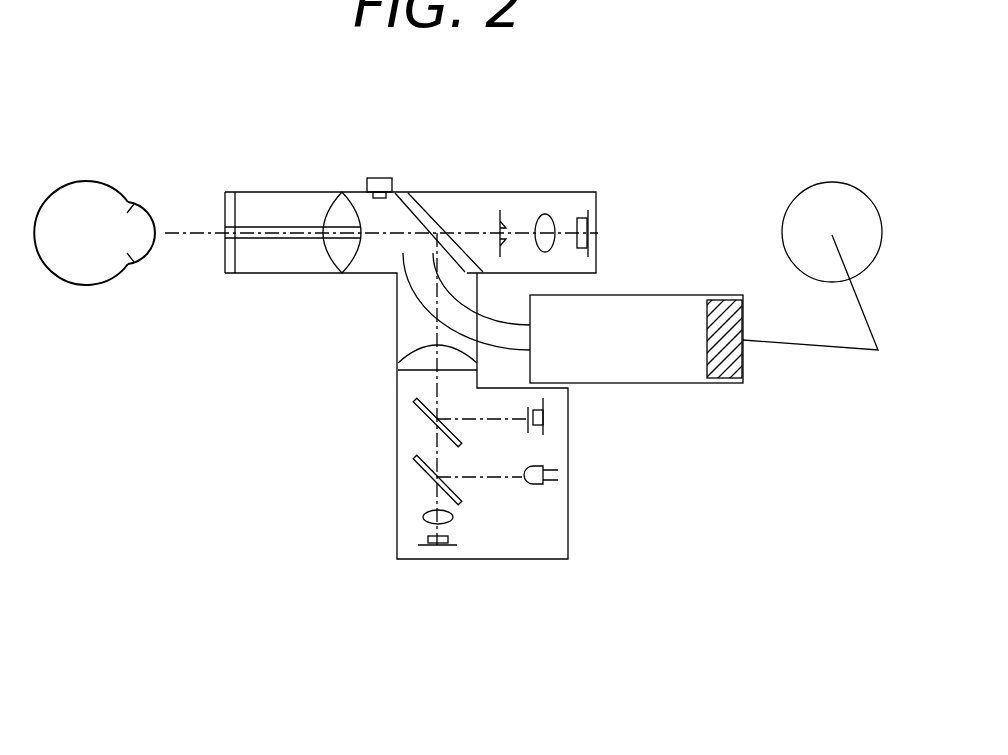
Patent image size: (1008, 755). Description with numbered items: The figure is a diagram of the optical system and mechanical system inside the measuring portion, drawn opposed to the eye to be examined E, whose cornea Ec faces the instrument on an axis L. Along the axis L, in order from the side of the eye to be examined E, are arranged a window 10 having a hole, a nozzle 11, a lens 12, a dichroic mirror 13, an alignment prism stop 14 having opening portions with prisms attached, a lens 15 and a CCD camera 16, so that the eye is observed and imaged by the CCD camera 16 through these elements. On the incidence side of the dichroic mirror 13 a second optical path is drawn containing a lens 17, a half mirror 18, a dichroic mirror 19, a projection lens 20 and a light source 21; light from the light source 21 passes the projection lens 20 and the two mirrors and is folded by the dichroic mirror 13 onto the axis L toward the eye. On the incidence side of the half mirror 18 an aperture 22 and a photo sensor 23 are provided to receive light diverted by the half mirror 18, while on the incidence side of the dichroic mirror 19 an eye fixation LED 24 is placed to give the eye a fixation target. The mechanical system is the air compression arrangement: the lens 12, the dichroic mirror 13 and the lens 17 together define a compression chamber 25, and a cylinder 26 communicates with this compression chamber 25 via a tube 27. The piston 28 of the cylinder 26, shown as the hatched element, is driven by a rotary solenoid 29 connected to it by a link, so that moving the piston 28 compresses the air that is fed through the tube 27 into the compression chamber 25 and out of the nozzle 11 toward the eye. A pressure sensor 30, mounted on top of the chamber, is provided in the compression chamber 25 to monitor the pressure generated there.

The eye to be examined E is at (80, 197).
The cornea Ec is at (147, 262).
The axis L is at (186, 222).
The window 10 is at (228, 263).
The nozzle 11 is at (276, 226).
The lens 12 is at (342, 205).
The dichroic mirror 13 is at (436, 213).
The alignment prism stop 14 is at (502, 218).
The lens 15 is at (547, 214).
The CCD camera 16 is at (590, 233).
The lens 17 is at (405, 364).
The half mirror 18 is at (418, 420).
The dichroic mirror 19 is at (418, 477).
The projection lens 20 is at (424, 518).
The light source 21 is at (437, 552).
The aperture 22 is at (530, 428).
The photo sensor 23 is at (545, 415).
The eye fixation LED 24 is at (537, 483).
The compression chamber 25 is at (405, 213).
The cylinder 26 is at (672, 384).
The tube 27 is at (420, 300).
The piston 28 is at (745, 372).
The rotary solenoid 29 is at (814, 208).
The pressure sensor 30 is at (382, 178).